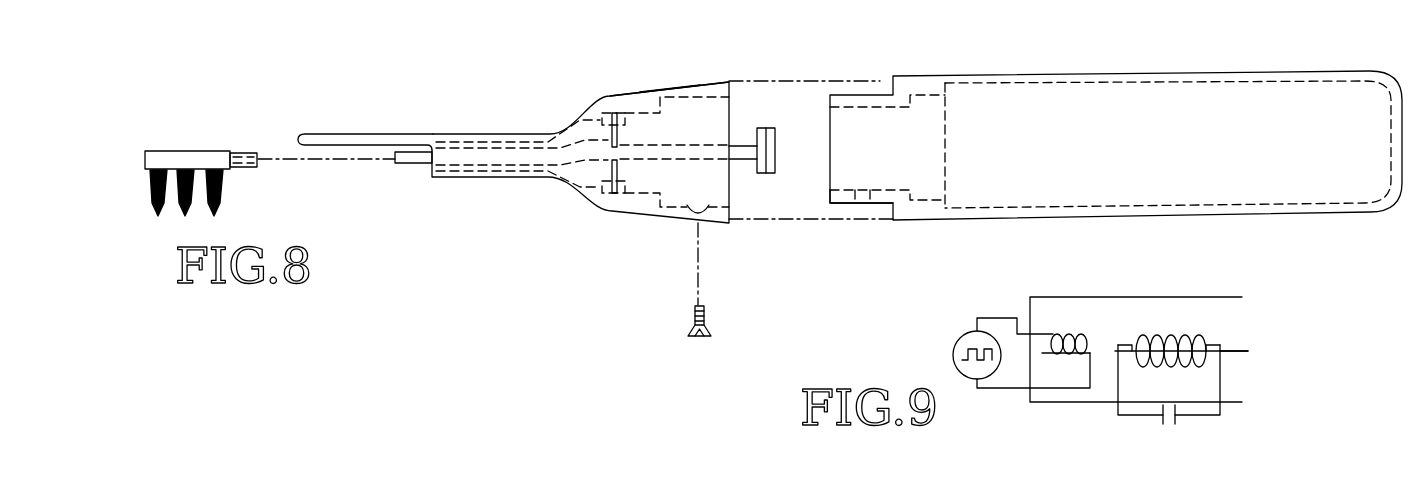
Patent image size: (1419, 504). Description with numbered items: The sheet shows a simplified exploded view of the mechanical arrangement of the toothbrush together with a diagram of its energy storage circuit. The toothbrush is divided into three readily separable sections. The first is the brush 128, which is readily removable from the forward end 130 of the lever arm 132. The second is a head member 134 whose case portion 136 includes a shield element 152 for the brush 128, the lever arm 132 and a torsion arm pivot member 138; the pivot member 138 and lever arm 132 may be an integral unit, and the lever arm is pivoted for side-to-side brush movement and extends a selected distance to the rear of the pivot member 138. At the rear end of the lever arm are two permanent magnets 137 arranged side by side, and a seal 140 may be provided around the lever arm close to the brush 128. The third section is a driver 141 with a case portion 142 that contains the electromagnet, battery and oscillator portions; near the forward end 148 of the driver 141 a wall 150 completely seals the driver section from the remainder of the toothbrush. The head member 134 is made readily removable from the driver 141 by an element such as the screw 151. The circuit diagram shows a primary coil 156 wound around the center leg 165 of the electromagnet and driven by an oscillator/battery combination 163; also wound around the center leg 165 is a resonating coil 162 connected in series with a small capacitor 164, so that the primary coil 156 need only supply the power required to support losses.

In FIG. 8, the brush 128 is at (204, 150).
In FIG. 8, the shield element 152 is at (350, 134).
In FIG. 8, the forward end 130 is at (401, 165).
In FIG. 8, the seal 140 is at (466, 180).
In FIG. 8, the lever arm 132 is at (490, 142).
In FIG. 8, the head member 134 is at (609, 68).
In FIG. 8, the case portion 136 is at (668, 88).
In FIG. 8, the permanent magnets 137 is at (772, 128).
In FIG. 8, the torsion arm pivot member 138 is at (601, 200).
In FIG. 8, the screw 151 is at (704, 318).
In FIG. 8, the driver 141 is at (1120, 58).
In FIG. 8, the case portion 142 is at (1230, 72).
In FIG. 8, the wall 150 is at (945, 160).
In FIG. 8, the forward end 148 is at (830, 205).
In FIG. 9, the oscillator/battery combination 163 is at (962, 335).
In FIG. 9, the primary coil 156 is at (1065, 334).
In FIG. 9, the resonating coil 162 is at (1178, 340).
In FIG. 9, the capacitor 164 is at (1162, 405).
In FIG. 9, the center leg 165 is at (1238, 351).